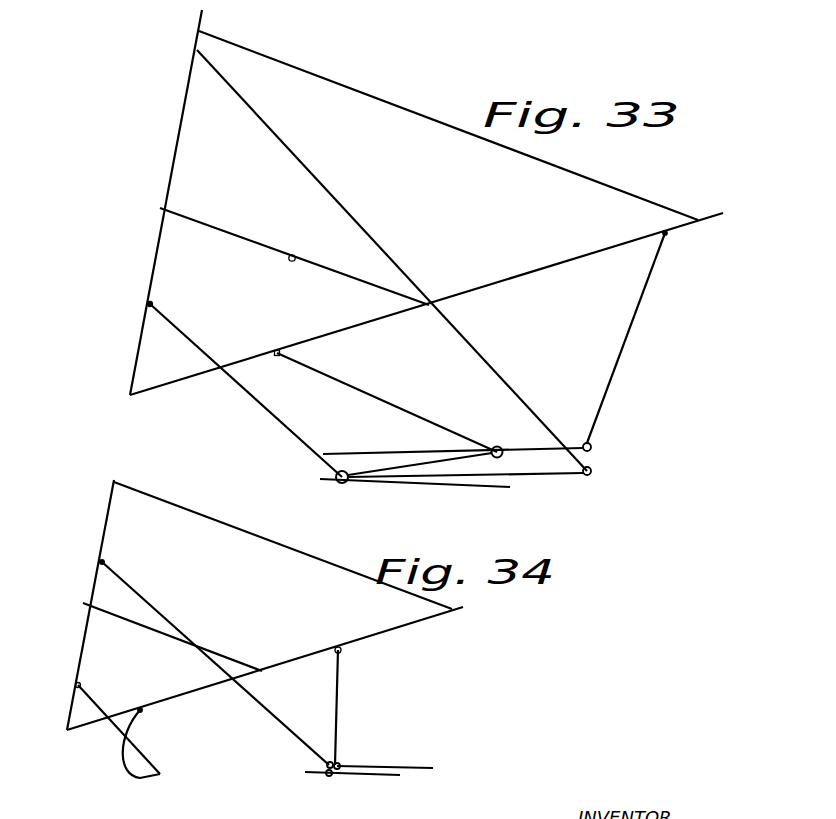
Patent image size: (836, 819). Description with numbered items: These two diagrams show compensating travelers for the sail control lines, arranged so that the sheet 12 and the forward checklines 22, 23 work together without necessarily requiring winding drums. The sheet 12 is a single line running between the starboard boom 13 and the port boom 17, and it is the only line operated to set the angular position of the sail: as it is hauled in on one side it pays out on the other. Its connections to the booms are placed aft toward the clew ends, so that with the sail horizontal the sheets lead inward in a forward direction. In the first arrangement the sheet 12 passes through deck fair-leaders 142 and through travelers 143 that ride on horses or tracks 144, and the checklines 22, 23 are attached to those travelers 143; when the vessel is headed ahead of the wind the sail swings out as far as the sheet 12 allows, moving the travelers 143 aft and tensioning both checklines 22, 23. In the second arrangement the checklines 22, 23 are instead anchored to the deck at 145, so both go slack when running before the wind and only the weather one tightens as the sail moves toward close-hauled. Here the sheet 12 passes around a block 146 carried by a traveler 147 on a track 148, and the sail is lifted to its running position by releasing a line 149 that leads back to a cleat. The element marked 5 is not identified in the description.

In FIG. 33, the boom 5 is at (233, 236).
In FIG. 34, the boom 5 is at (110, 612).
In FIG. 33, the sheet 12 is at (382, 468).
In FIG. 34, the sheet 12 is at (336, 695).
In FIG. 33, the starboard boom 13 is at (517, 278).
In FIG. 34, the starboard boom 13 is at (165, 701).
In FIG. 33, the port boom 17 is at (178, 143).
In FIG. 34, the port boom 17 is at (80, 643).
In FIG. 33, the forward checkline 22 is at (347, 382).
In FIG. 34, the forward checkline 22 is at (143, 778).
In FIG. 33, the forward checkline 23 is at (275, 421).
In FIG. 34, the forward checkline 23 is at (87, 693).
In FIG. 33, the deck fair-leader 142 is at (590, 467).
In FIG. 33, the traveler 143 is at (506, 429).
In FIG. 33, the horse or track 144 is at (362, 440).
In FIG. 34, the deck anchorage point 145 is at (157, 769).
In FIG. 34, the block 146 is at (336, 762).
In FIG. 34, the traveler 147 is at (325, 776).
In FIG. 34, the track 148 is at (381, 777).
In FIG. 33, the line 149 is at (343, 484).
In FIG. 34, the line 149 is at (393, 767).